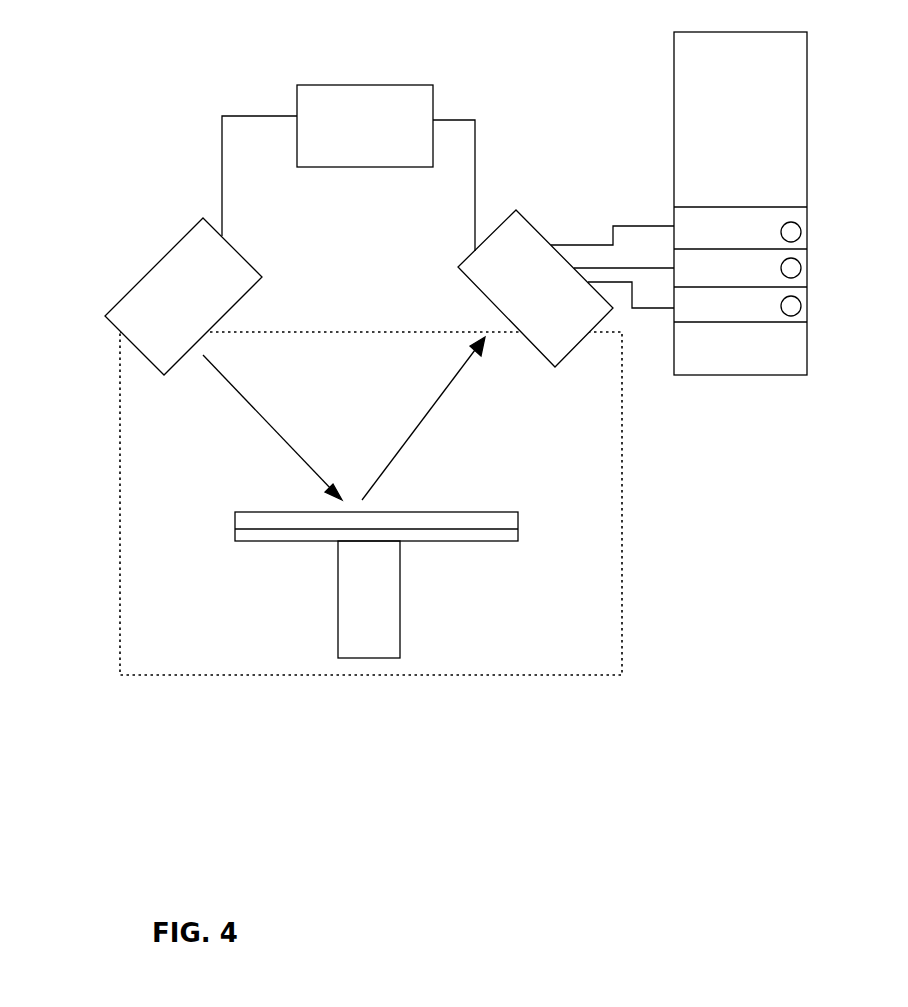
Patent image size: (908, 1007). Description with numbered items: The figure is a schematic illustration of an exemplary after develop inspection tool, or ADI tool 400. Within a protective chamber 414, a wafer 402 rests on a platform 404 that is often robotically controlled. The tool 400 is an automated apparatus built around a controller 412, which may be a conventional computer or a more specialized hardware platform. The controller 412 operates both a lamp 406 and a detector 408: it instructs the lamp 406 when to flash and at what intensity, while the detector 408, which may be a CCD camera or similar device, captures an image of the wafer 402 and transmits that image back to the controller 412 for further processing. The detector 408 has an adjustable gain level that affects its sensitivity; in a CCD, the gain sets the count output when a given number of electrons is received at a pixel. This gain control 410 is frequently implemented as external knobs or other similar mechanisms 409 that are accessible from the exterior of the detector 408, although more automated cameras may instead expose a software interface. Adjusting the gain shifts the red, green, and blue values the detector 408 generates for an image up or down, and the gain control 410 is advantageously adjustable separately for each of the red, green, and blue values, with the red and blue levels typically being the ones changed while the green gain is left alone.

The ADI tool 400 is at (25, 446).
The wafer 402 is at (518, 523).
The platform 404 is at (423, 543).
The lamp 406 is at (178, 235).
The detector 408 is at (530, 224).
The external knobs or other similar mechanisms 409 is at (801, 266).
The gain control 410 is at (807, 92).
The controller 412 is at (405, 85).
The protective chamber 414 is at (371, 503).